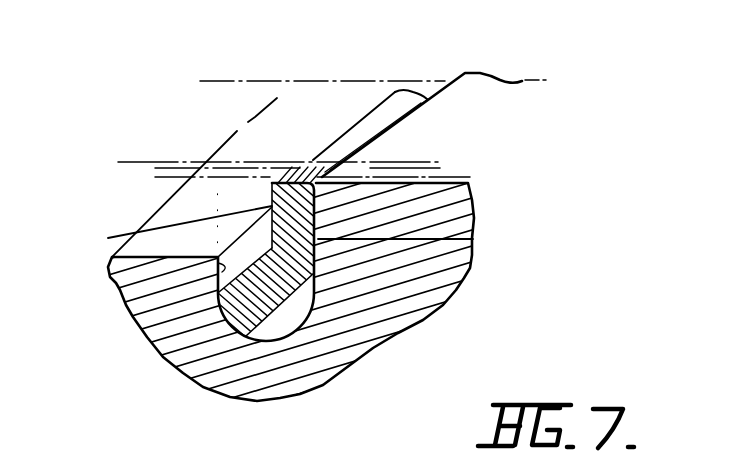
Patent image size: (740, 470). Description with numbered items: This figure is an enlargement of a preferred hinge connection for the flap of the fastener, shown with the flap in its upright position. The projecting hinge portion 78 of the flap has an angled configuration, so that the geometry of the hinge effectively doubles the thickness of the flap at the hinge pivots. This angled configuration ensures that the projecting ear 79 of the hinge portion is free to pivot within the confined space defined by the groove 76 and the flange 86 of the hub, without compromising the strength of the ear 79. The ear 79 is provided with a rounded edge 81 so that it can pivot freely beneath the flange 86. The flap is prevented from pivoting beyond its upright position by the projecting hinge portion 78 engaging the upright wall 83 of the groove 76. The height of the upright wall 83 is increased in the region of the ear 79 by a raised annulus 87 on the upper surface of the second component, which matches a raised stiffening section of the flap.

The groove 76 is at (132, 308).
The projecting hinge portion 78 is at (368, 128).
The projecting ear 79 is at (175, 230).
The rounded edge 81 is at (312, 162).
The upright wall 83 is at (473, 239).
The flange 86 is at (238, 142).
The raised annulus 87 is at (187, 177).